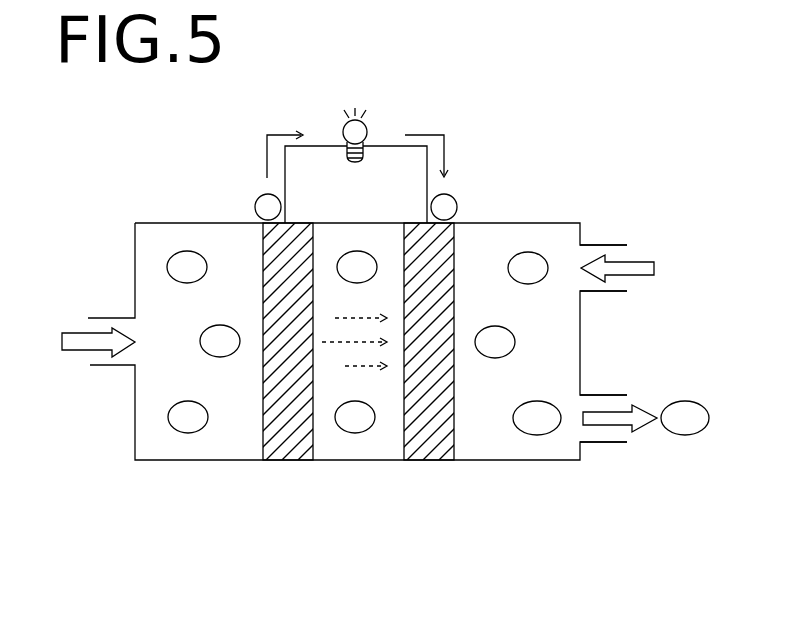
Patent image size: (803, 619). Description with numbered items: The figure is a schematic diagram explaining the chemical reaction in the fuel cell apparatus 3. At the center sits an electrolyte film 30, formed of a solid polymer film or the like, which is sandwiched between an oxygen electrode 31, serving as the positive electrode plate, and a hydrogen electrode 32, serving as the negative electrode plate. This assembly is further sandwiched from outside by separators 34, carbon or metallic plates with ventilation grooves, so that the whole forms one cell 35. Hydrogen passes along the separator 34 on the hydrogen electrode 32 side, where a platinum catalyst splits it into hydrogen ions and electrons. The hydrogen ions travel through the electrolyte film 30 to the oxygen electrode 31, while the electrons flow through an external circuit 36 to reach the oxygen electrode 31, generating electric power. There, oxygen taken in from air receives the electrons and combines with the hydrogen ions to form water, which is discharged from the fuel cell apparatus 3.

The fuel cell apparatus 3 is at (590, 136).
The electrolyte film 30 is at (358, 452).
The oxygen electrode 31 is at (428, 450).
The hydrogen electrode 32 is at (285, 448).
The separator 34 is at (193, 452).
The cell 35 is at (557, 480).
The external circuit 36 is at (385, 146).